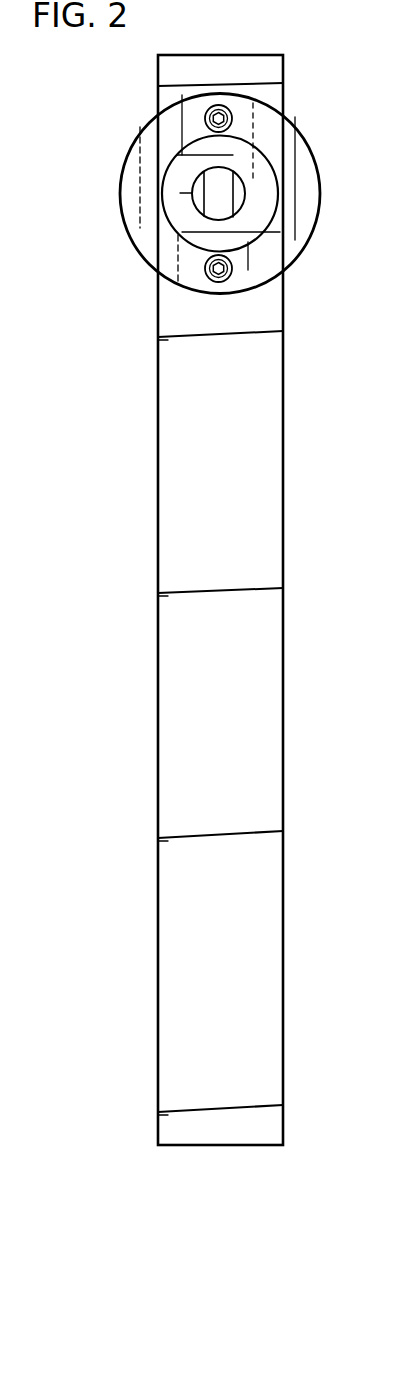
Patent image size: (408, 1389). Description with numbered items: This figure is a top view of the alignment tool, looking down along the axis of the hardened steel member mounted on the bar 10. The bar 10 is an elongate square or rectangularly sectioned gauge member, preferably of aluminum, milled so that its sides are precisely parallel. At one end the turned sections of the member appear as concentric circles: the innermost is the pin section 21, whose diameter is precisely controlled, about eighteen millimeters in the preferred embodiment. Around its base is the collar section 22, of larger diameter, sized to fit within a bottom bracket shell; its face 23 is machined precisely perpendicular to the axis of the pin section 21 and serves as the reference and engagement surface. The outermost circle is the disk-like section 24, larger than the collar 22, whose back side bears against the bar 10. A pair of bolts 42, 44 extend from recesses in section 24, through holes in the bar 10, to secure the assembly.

The bar 10 is at (240, 483).
The pin section 21 is at (243, 205).
The collar section 22 is at (245, 194).
The collar face 23 is at (262, 183).
The disk-like section 24 is at (306, 142).
The bolt 42 is at (231, 114).
The bolt 44 is at (284, 283).